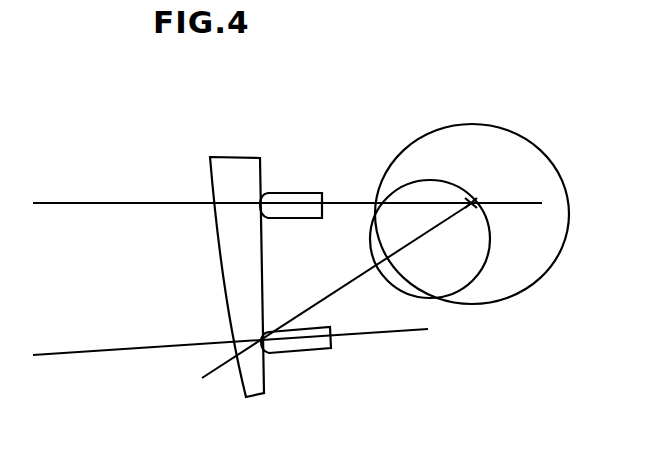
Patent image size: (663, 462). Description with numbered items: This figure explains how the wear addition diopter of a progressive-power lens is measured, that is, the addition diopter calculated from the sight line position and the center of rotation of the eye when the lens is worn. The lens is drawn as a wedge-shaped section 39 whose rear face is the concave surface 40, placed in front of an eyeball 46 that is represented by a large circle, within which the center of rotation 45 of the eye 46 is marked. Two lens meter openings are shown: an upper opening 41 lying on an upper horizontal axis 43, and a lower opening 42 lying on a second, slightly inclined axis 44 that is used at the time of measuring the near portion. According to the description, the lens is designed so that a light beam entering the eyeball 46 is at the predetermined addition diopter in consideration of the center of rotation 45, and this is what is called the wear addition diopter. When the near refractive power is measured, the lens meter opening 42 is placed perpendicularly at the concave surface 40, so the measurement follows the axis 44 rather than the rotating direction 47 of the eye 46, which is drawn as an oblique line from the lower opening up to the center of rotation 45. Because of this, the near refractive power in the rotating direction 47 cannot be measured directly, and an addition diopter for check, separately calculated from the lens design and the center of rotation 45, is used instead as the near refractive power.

The prism 39 is at (207, 182).
The concave surface 40 is at (268, 384).
The first lens 41 is at (300, 193).
The lens meter opening 42 is at (326, 348).
The first optical axis 43 is at (104, 203).
The second optical axis 44 is at (102, 352).
The center of rotation 45 is at (472, 203).
The eyeball 46 is at (557, 172).
The rotating direction 47 is at (202, 378).